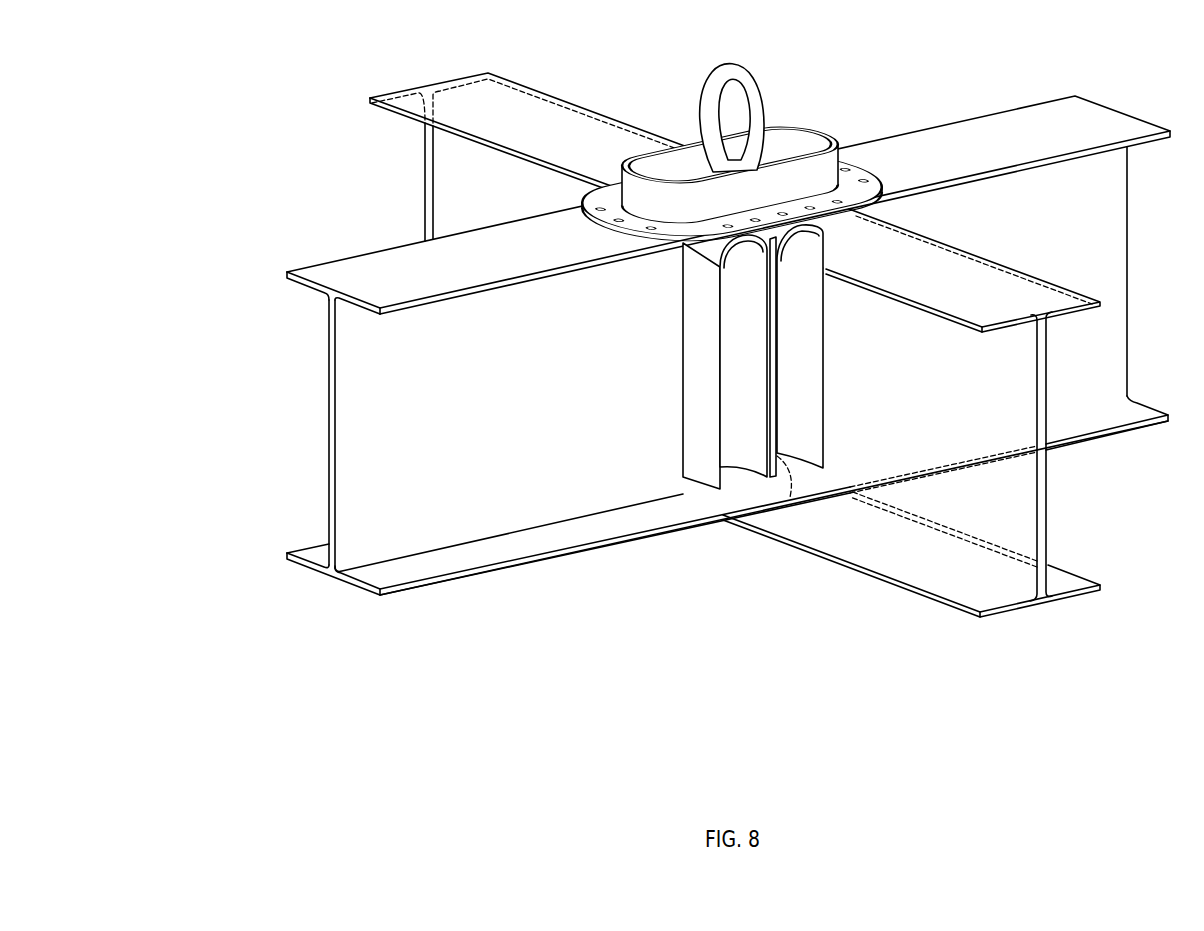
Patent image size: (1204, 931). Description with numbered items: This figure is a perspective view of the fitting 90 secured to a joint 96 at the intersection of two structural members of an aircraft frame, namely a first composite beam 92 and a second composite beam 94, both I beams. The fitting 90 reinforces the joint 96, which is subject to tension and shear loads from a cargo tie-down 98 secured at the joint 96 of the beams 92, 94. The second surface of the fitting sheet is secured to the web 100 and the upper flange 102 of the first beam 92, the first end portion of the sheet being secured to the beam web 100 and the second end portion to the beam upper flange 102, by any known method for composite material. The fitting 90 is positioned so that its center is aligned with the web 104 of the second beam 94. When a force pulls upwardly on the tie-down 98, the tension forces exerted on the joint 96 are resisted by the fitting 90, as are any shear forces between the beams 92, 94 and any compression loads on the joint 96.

The fitting 90 is at (845, 318).
The first composite beam 92 is at (652, 345).
The second composite beam 94 is at (776, 353).
The joint 96 is at (723, 538).
The cargo tie-down 98 is at (792, 128).
The web 100 is at (329, 453).
The flange 102 is at (325, 260).
The web 104 is at (1047, 508).